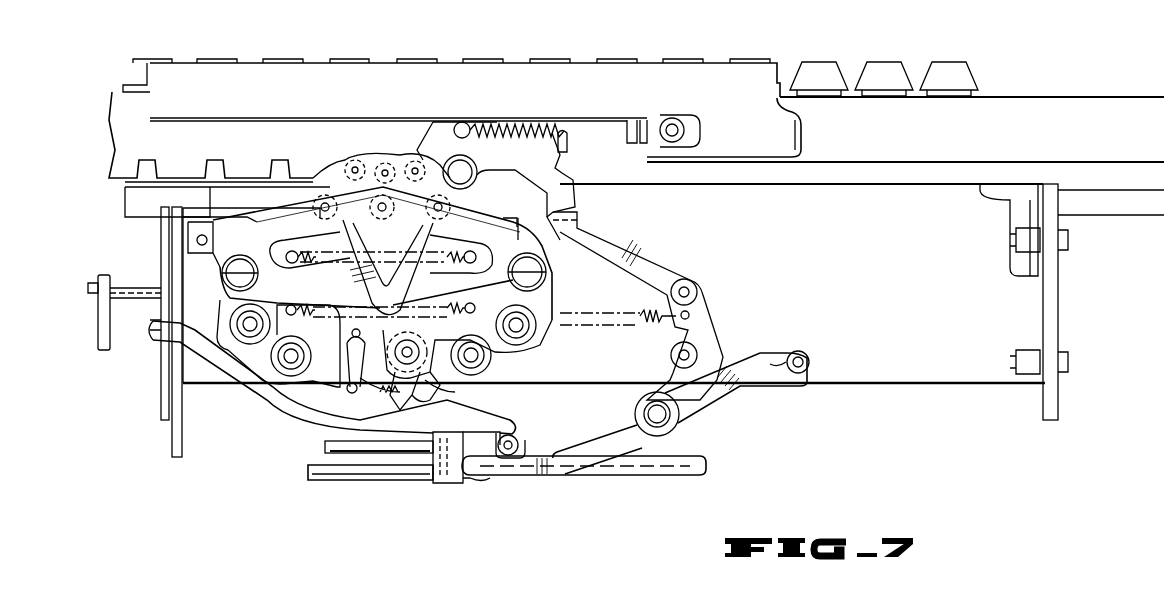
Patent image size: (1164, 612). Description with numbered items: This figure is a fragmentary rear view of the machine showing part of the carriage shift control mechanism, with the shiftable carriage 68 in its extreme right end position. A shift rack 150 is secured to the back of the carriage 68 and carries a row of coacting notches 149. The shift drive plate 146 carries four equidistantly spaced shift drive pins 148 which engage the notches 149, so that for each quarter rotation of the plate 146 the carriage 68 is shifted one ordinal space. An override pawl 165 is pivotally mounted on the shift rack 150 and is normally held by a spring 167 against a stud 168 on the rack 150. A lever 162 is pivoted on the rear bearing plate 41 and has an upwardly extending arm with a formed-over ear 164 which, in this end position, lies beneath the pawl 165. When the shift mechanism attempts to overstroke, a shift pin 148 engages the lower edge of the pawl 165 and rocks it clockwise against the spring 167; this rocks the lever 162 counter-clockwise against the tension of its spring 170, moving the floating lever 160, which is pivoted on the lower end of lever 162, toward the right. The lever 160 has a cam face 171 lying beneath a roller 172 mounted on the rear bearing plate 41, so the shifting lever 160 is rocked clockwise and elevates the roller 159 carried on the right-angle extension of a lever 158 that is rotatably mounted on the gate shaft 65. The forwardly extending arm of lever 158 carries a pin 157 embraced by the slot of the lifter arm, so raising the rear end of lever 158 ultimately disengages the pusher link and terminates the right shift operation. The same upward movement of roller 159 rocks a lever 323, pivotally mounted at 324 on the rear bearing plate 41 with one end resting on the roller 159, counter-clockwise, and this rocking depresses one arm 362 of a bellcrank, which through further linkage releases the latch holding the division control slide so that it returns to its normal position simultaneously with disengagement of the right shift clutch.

The rear bearing plate 41 is at (925, 333).
The gate shaft 65 is at (401, 474).
The shiftable carriage 68 is at (1097, 142).
The shift drive plate 146 is at (318, 188).
The shift drive pin 148 is at (417, 172).
The notch 149 is at (271, 164).
The shift rack 150 is at (197, 150).
The pin 157 is at (375, 446).
The lever 158 is at (442, 478).
The roller 159 is at (514, 447).
The lever 160 is at (693, 400).
The lever 162 is at (734, 316).
The formed-over ear 164 is at (576, 218).
The override pawl 165 is at (558, 176).
The spring 167 is at (556, 141).
The stud 168 is at (380, 172).
The spring 170 is at (664, 323).
The cam face 171 is at (770, 364).
The roller 172 is at (808, 361).
The lever 323 is at (281, 391).
The pivot 324 is at (457, 383).
The arm 362 is at (150, 336).